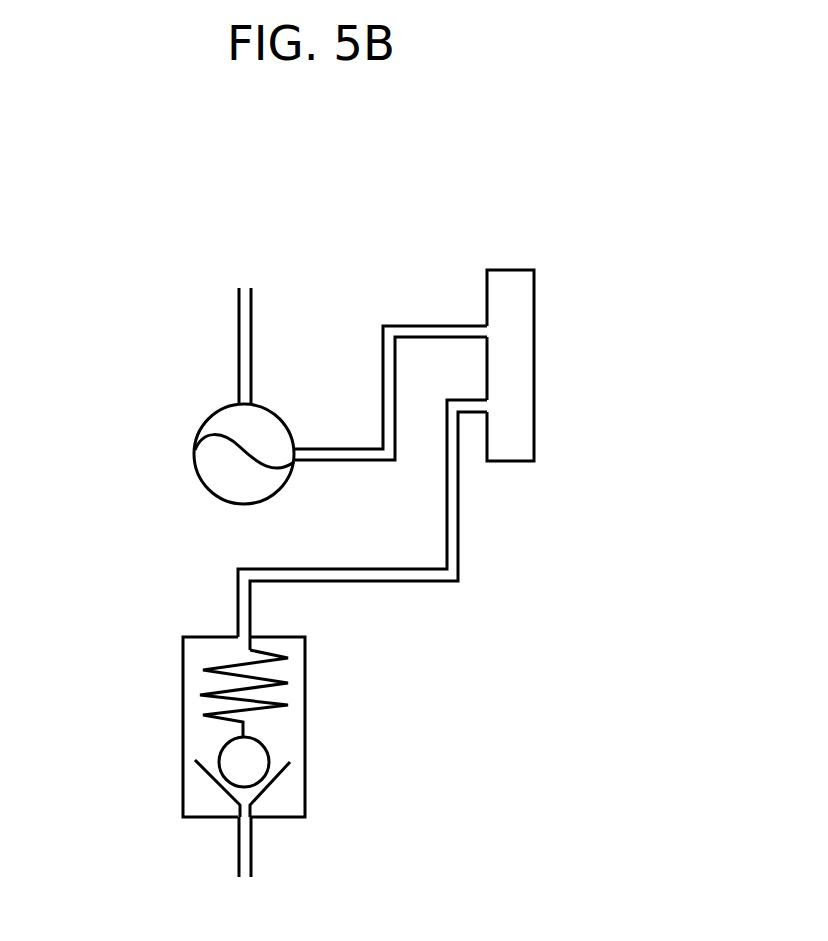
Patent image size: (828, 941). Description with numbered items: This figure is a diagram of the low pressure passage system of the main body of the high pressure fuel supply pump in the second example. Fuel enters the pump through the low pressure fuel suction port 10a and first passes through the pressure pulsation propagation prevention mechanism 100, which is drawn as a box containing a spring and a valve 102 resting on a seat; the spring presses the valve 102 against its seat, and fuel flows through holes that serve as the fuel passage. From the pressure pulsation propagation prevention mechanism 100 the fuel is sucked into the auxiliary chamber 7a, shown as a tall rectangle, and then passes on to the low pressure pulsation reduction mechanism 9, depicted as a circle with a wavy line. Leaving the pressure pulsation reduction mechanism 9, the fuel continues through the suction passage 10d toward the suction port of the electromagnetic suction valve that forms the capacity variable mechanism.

The suction passage 10d is at (288, 327).
The pressure pulsation reduction mechanism 9 is at (210, 420).
The auxiliary chamber 7a is at (527, 322).
The pressure pulsation propagation prevention mechanism 100 is at (305, 662).
The valve 102 is at (258, 755).
The low pressure fuel suction port 10a is at (288, 855).